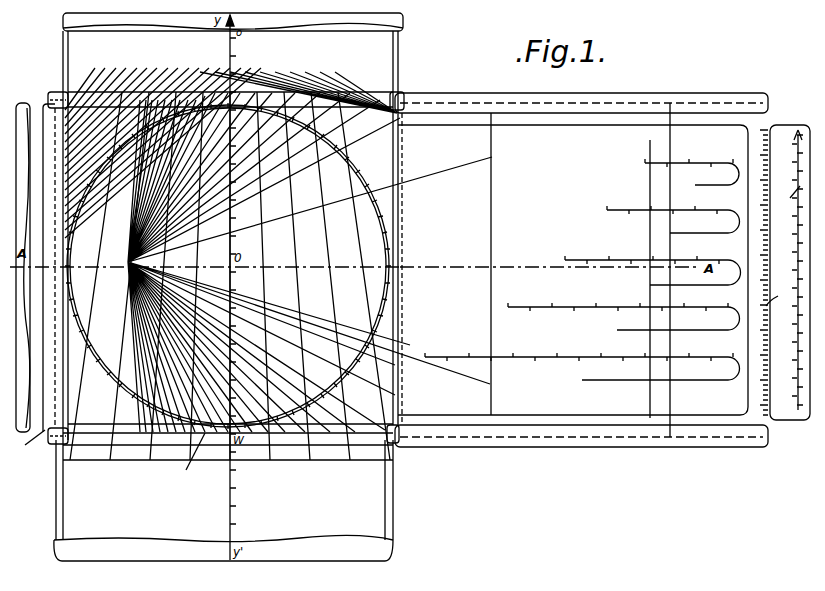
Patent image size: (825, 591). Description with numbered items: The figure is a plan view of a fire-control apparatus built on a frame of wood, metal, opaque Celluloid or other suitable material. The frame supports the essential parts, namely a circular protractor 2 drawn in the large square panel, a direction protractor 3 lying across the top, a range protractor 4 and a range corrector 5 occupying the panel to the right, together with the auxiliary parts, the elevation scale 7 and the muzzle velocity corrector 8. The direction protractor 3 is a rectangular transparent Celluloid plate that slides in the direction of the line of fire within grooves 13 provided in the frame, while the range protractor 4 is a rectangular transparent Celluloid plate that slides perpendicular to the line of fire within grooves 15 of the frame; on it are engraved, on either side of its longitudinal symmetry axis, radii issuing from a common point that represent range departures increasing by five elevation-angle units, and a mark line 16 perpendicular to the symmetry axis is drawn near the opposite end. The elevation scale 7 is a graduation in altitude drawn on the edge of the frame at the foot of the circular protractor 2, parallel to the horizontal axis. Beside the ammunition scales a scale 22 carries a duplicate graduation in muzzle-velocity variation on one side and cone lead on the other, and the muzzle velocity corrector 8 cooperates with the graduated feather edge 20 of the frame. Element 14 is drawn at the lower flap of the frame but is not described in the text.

The circular protractor 2 is at (112, 372).
The direction protractor 3 is at (233, 33).
The range protractor 4 is at (26, 103).
The range corrector 5 is at (581, 270).
The elevation scale 7 is at (189, 460).
The muzzle velocity corrector 8 is at (790, 272).
The grooves 13 is at (26, 442).
The bottom flap 14 is at (223, 537).
The grooves 15 is at (58, 98).
The mark line 16 is at (649, 270).
The graduated feather edge 20 is at (777, 294).
The scale 22 is at (786, 199).